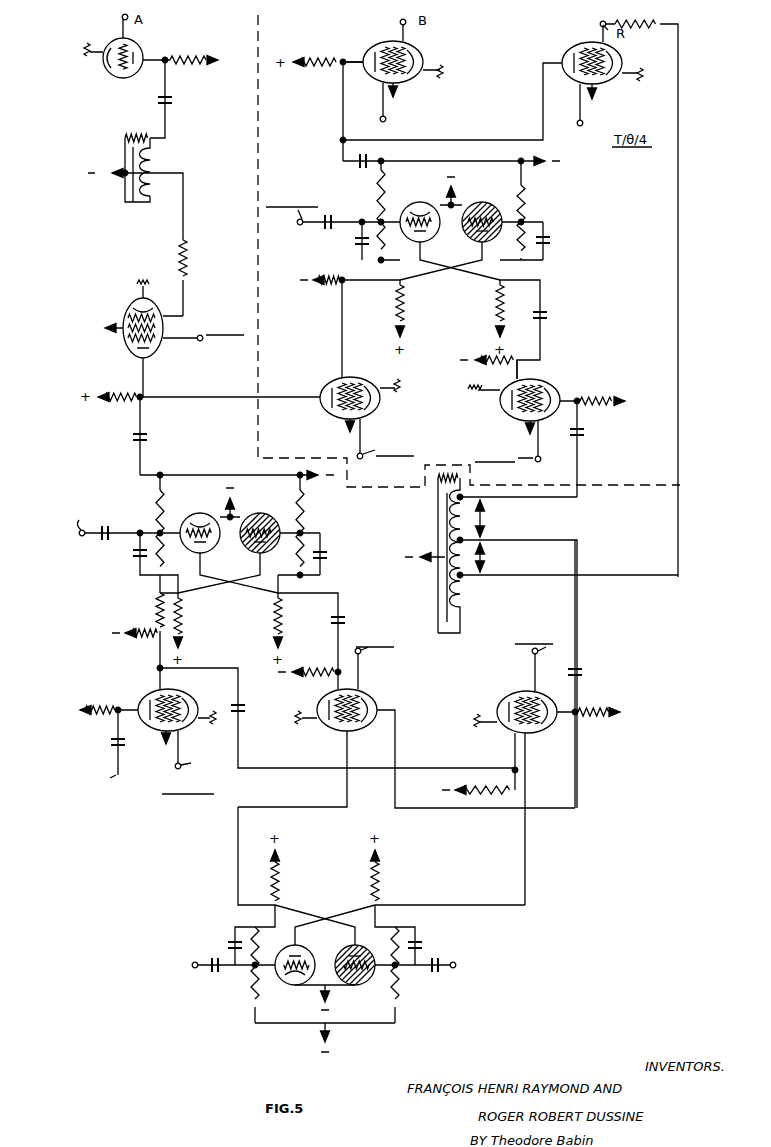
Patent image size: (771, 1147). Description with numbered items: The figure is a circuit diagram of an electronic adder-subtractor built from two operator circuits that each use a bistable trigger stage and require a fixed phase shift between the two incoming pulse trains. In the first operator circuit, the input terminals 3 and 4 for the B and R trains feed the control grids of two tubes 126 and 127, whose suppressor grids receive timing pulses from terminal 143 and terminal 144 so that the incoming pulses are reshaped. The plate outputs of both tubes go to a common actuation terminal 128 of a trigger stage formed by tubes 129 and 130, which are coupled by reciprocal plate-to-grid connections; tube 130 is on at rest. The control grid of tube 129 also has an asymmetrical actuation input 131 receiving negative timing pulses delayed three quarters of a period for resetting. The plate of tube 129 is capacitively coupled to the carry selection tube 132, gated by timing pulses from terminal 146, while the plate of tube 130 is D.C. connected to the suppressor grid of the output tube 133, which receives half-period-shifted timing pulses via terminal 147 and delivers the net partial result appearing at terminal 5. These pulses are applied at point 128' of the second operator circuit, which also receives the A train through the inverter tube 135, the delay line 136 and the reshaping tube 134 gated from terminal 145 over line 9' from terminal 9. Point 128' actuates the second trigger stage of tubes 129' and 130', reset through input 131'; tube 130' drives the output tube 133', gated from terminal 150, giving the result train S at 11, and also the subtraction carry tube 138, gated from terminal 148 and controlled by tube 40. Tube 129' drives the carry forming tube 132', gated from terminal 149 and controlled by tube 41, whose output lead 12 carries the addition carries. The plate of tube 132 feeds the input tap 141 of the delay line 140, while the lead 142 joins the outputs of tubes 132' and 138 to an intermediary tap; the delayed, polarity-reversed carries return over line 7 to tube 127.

The input terminal 3 is at (401, 21).
The input terminal 4 is at (606, 22).
The terminal 5 is at (299, 393).
The output line 7 is at (666, 582).
The input terminal A 9 is at (116, 19).
The input line 9' is at (127, 378).
The output 11 is at (112, 757).
The output lead 12 is at (562, 713).
The tube of control trigger stage 40 is at (292, 987).
The tube of control trigger stage 41 is at (360, 987).
The reshaping tube 126 is at (412, 82).
The input carry-over tube 127 is at (624, 82).
The common actuation terminal 128 is at (432, 105).
The symmetrical actuation input terminal 128' is at (176, 466).
The trigger stage tube 129 is at (450, 233).
The trigger stage tube 129' is at (228, 544).
The trigger stage tube 130 is at (467, 233).
The trigger stage tube 130' is at (245, 544).
The asymmetrical actuation input 131 is at (333, 218).
The asymmetrical resetting actuation input 131' is at (126, 534).
The carry selection tube 132 is at (556, 402).
The carry forming tube 132' is at (406, 738).
The output tube 133 is at (360, 406).
The output tube 133' is at (146, 715).
The reshaping tube 134 is at (128, 304).
The inverter tube 135 is at (138, 90).
The delay line 136 is at (125, 192).
The subtraction carry tube 138 is at (540, 731).
The delay line 140 is at (438, 525).
The input tap 141 is at (578, 496).
The lead 142 is at (577, 536).
The terminal 143 is at (386, 118).
The terminal 144 is at (588, 130).
The terminal 145 is at (200, 341).
The terminal 146 is at (510, 451).
The terminal 147 is at (382, 450).
The terminal 148 is at (527, 660).
The terminal 149 is at (374, 660).
The terminal 150 is at (189, 762).